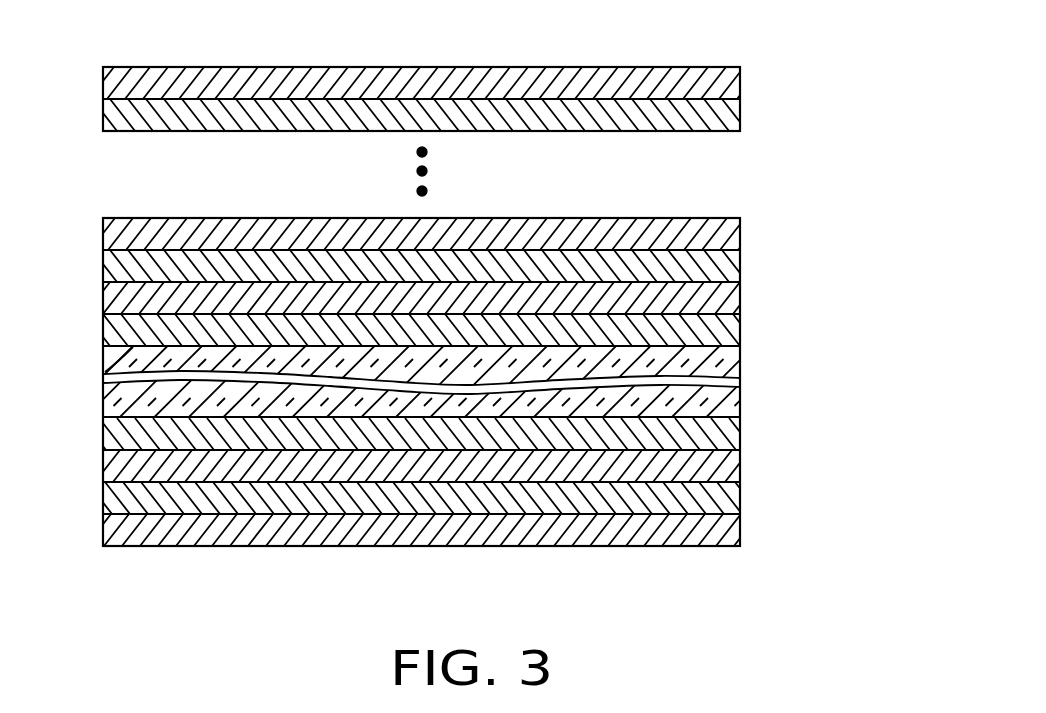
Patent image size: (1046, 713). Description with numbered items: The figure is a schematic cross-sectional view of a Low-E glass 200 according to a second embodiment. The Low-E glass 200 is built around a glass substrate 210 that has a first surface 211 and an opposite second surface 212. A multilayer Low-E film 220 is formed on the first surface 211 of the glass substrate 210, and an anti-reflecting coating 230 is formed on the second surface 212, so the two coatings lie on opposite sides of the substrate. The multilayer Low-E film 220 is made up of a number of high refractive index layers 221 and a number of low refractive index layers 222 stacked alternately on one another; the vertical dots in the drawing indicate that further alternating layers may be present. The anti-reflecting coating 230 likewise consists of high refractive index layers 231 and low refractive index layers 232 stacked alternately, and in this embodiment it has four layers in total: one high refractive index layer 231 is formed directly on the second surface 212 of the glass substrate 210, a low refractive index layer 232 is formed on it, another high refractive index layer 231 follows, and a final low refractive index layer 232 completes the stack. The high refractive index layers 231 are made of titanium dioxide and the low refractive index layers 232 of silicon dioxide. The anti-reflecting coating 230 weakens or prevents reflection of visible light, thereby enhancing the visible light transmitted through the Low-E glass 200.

The Low-E glass 200 is at (663, 50).
The multilayer Low-E film 220 is at (830, 70).
The low refractive index layer 222 is at (731, 86).
The high refractive index layer 221 is at (731, 115).
The glass substrate 210 is at (730, 372).
The first surface 211 is at (103, 375).
The second surface 212 is at (140, 418).
The anti-reflecting coating 230 is at (834, 420).
The high refractive index layer 231 is at (731, 430).
The low refractive index layer 232 is at (732, 462).